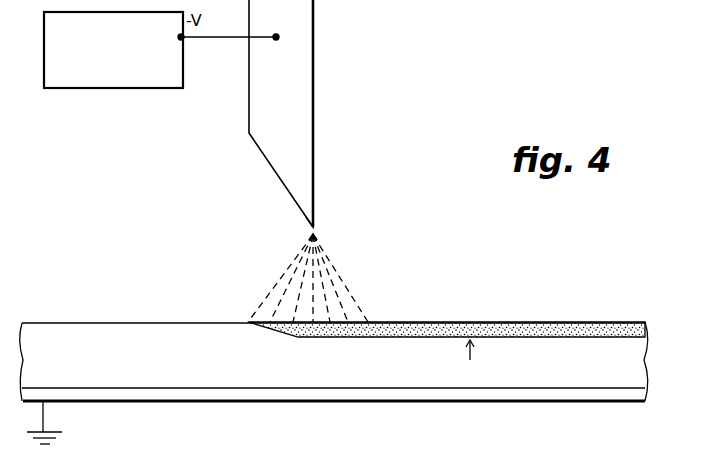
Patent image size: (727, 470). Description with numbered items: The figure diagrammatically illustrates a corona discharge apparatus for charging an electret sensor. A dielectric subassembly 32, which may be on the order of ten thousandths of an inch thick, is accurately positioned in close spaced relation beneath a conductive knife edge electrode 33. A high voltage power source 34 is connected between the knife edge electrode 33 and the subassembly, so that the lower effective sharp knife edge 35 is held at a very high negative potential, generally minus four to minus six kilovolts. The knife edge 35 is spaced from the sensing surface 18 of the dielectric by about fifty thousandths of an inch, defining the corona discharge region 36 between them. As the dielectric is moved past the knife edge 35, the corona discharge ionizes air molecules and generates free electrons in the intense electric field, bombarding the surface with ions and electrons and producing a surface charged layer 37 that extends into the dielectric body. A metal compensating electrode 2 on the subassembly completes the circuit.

The metal compensating electrode 2 is at (130, 396).
The sensing surface 18 is at (97, 324).
The dielectric subassembly 32 is at (353, 373).
The knife edge electrode 33 is at (262, 91).
The high voltage power source 34 is at (100, 90).
The knife edge 35 is at (311, 225).
The corona discharge region 36 is at (256, 280).
The surface charged layer 37 is at (447, 322).